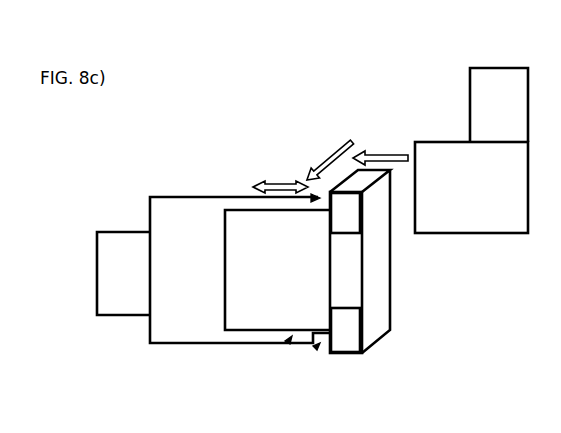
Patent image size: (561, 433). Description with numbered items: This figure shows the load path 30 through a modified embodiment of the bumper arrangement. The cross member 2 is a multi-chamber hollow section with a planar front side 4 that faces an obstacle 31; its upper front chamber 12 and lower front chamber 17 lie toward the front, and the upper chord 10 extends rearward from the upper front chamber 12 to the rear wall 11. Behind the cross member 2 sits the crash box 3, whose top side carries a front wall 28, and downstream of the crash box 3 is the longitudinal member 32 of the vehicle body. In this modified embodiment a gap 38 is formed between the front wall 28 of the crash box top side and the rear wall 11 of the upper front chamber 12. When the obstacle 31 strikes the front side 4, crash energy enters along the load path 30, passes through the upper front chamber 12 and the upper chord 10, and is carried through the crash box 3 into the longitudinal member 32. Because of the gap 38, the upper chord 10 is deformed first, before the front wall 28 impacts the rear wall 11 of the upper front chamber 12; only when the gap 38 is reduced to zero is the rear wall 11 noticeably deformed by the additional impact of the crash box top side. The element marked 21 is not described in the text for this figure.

The cross member 2 is at (289, 341).
The crash box 3 is at (183, 330).
The front side 4 is at (380, 268).
The upper chord 10 is at (231, 209).
The rear wall 11 is at (330, 218).
The upper front chamber 12 is at (345, 213).
The front chamber 17 is at (345, 330).
The circuit board 21 is at (273, 304).
The front wall 28 is at (310, 208).
The load path 30 is at (320, 155).
The obstacle 31 is at (488, 208).
The longitudinal member 32 is at (135, 283).
The gap 38 is at (313, 197).